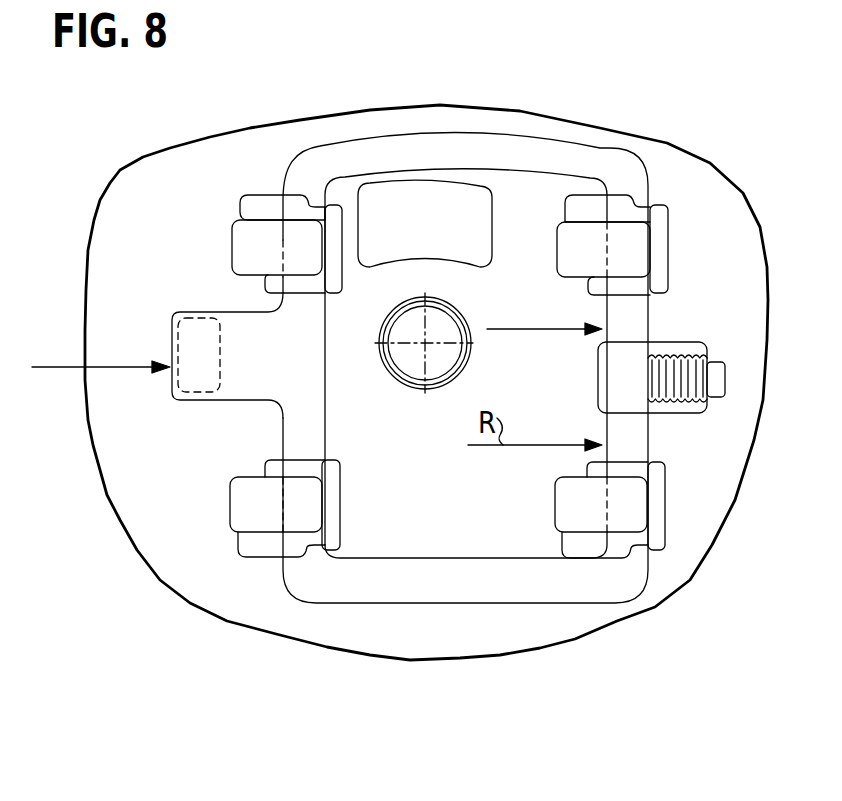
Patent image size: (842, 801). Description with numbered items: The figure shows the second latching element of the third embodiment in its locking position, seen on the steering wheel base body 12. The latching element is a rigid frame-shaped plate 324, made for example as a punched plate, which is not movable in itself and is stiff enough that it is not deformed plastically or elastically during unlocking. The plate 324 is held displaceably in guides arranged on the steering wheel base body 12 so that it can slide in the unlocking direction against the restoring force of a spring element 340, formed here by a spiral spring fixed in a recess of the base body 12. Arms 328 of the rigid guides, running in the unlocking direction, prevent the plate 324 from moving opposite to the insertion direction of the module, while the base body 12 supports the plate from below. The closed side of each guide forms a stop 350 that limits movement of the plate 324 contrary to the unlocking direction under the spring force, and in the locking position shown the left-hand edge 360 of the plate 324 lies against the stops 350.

The steering wheel base body 12 is at (150, 177).
The plate 324 is at (490, 145).
The arms 328 is at (293, 243).
The spring element 340 is at (683, 403).
The stop 350 is at (278, 504).
The left-hand edge 360 is at (283, 437).